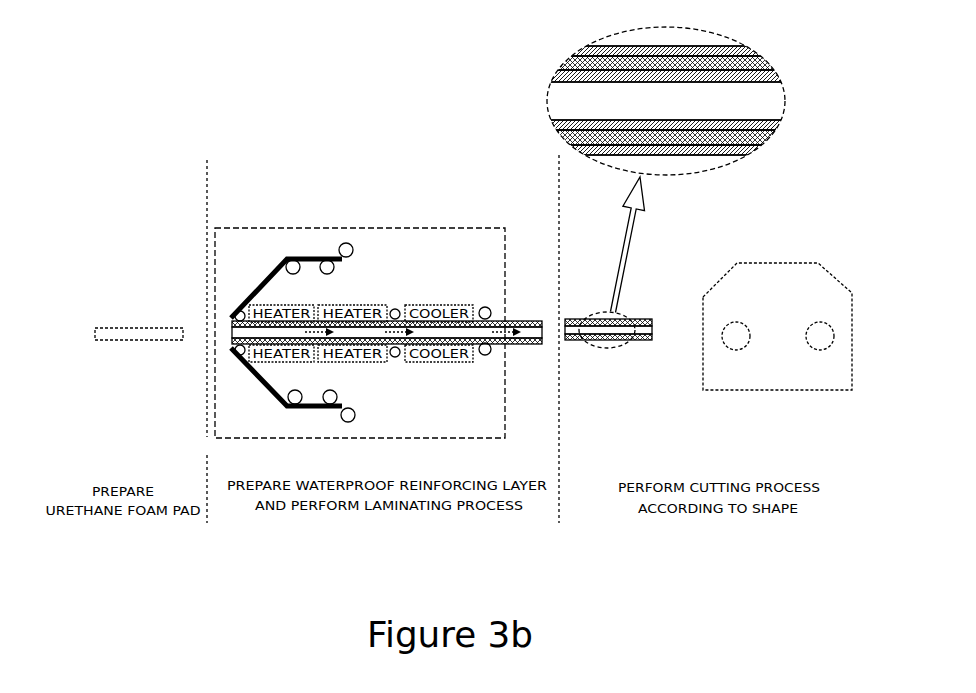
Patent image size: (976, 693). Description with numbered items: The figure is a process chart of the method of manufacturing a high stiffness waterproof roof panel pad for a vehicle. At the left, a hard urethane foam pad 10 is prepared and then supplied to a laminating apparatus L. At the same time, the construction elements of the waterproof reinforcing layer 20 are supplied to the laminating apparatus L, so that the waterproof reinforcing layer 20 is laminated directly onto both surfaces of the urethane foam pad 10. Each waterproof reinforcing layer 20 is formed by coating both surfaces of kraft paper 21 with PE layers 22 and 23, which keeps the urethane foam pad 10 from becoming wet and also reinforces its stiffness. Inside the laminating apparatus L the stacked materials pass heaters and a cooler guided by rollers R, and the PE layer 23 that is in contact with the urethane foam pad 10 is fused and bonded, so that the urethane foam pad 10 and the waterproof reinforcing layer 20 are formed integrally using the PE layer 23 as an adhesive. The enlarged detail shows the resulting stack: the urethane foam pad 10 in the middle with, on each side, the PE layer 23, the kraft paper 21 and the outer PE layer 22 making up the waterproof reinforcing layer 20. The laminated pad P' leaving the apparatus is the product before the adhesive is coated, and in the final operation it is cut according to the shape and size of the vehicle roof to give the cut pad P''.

The urethane foam pad 10 is at (146, 329).
The waterproof reinforcing layer 20 is at (641, 101).
The kraft paper 21 is at (335, 269).
The PE layer 22 is at (300, 272).
The PE layer 23 is at (359, 237).
The laminating apparatus L is at (332, 228).
The pressing roller R is at (395, 309).
The pad P' is at (629, 275).
The pad P'' is at (769, 320).